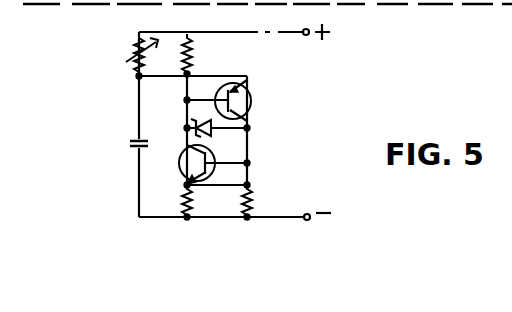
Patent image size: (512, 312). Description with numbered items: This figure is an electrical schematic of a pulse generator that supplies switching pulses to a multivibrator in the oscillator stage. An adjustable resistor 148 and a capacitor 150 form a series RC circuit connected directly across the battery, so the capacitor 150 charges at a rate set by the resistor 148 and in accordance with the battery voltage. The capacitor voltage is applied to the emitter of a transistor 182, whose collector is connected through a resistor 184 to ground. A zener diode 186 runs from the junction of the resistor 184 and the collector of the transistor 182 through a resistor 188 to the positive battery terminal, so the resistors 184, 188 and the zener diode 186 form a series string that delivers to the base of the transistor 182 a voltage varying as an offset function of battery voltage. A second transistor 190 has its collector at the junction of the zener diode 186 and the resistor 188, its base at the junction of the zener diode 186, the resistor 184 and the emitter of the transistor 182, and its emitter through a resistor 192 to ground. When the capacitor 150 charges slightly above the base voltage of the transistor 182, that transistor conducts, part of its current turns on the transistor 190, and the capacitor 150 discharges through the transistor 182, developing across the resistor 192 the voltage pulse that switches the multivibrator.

The adjustable resistor 148 is at (137, 46).
The capacitor 150 is at (136, 140).
The transistor 182 is at (253, 98).
The resistor 184 is at (318, 191).
The zener diode 186 is at (249, 139).
The resistor 188 is at (192, 62).
The second transistor 190 is at (249, 164).
The resistor 192 is at (183, 199).